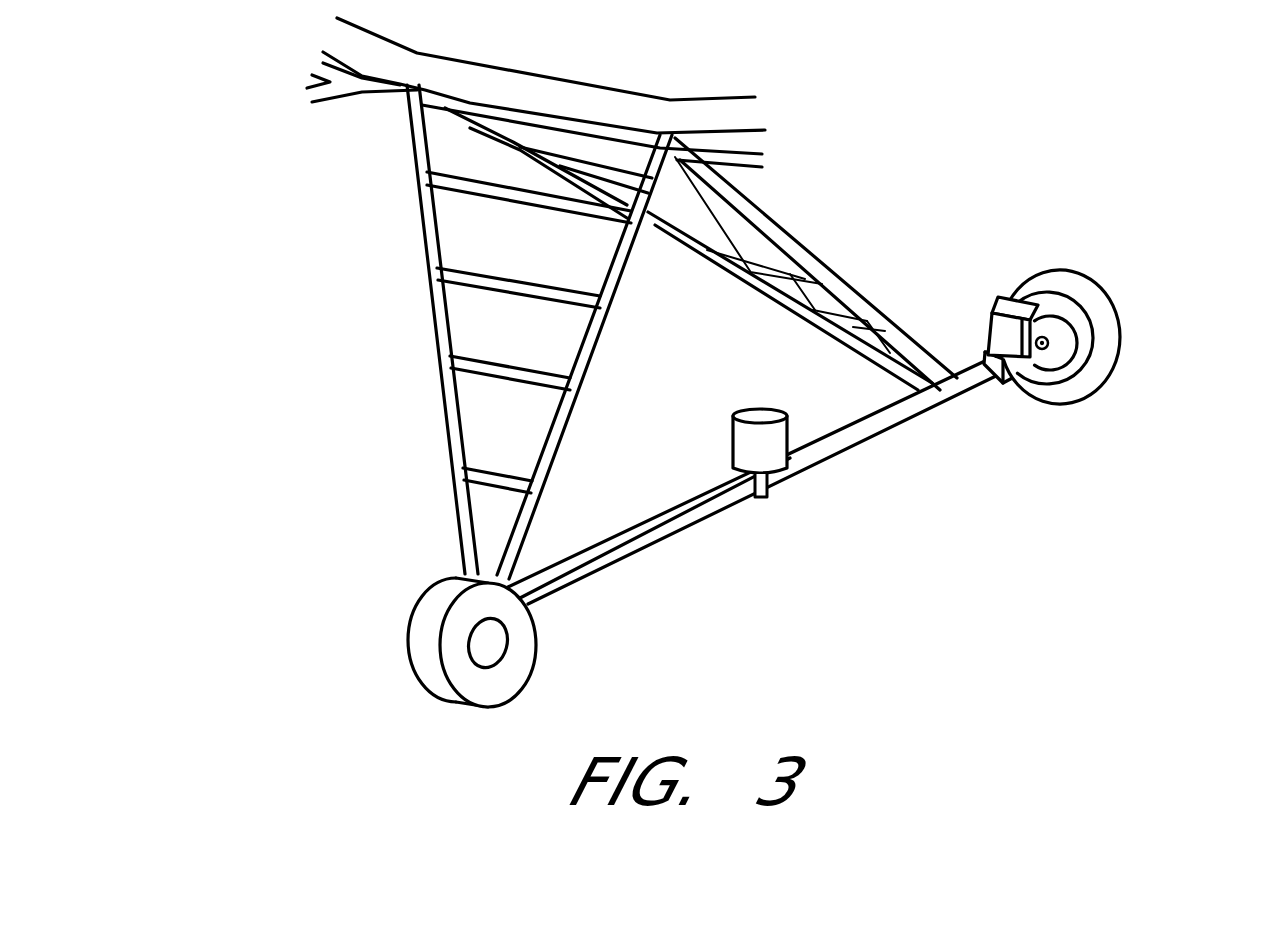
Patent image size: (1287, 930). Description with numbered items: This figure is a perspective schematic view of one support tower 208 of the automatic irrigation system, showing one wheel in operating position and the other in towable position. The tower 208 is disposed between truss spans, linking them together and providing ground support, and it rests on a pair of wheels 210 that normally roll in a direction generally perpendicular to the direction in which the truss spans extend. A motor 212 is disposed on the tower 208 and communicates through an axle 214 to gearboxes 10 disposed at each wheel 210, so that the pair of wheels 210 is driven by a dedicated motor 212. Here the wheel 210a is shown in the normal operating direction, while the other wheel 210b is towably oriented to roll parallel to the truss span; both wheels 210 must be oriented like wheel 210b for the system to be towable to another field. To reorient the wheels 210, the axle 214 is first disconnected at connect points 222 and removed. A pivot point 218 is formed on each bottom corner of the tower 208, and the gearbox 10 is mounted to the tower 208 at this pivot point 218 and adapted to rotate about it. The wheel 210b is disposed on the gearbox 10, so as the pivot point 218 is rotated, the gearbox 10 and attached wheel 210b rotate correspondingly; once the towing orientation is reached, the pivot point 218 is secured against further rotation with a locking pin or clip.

The gearbox 10 is at (1010, 338).
The support tower 208 is at (358, 331).
The wheels 210 is at (340, 612).
The wheel in normal operating direction 210a is at (438, 690).
The towably oriented wheel 210b is at (1073, 282).
The motor 212 is at (762, 415).
The axle 214 is at (612, 566).
The pivot point 218 is at (990, 317).
The connect points 222 is at (778, 478).